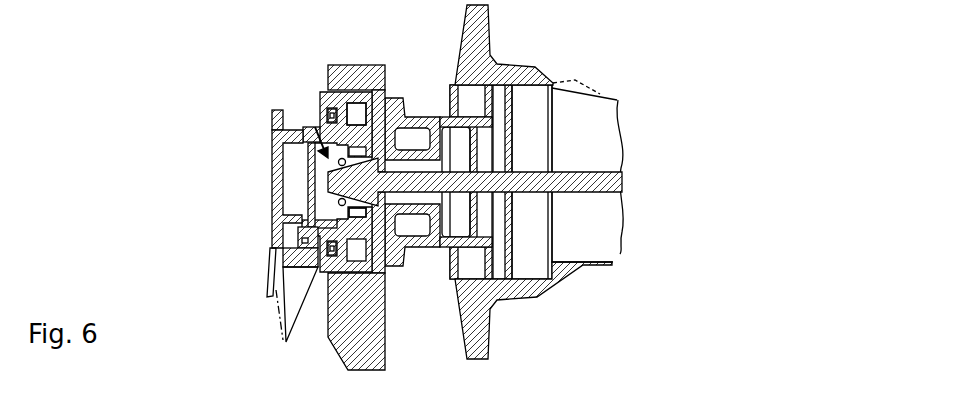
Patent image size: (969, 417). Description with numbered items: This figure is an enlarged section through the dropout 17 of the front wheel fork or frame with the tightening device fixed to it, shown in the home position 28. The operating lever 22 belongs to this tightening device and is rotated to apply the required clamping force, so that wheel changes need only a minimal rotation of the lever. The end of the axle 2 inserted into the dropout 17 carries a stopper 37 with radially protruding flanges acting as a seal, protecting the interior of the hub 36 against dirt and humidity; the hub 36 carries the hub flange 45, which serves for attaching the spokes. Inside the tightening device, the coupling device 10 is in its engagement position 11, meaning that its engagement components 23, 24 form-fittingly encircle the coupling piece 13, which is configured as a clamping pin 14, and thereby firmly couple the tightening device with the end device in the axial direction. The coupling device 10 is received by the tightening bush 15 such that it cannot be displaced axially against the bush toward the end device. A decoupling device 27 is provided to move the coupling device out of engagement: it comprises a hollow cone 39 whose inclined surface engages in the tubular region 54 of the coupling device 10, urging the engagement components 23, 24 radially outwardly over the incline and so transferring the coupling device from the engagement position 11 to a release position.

The axle 2 is at (623, 173).
The coupling device 10 is at (360, 128).
The engagement position 11 is at (308, 128).
The coupling piece 13 is at (325, 177).
The clamping pin 14 is at (328, 161).
The tightening bush 15 is at (321, 100).
The dropout 17 is at (380, 321).
The operating lever 22 is at (283, 289).
The engagement component 23 is at (357, 125).
The engagement component 24 is at (357, 222).
The decoupling device 27 is at (277, 133).
The home position 28 is at (170, 60).
The hub 36 is at (562, 84).
The stopper 37 is at (421, 115).
The hollow cone 39 is at (257, 198).
The hub flange 45 is at (482, 25).
The tubular region 54 is at (316, 268).